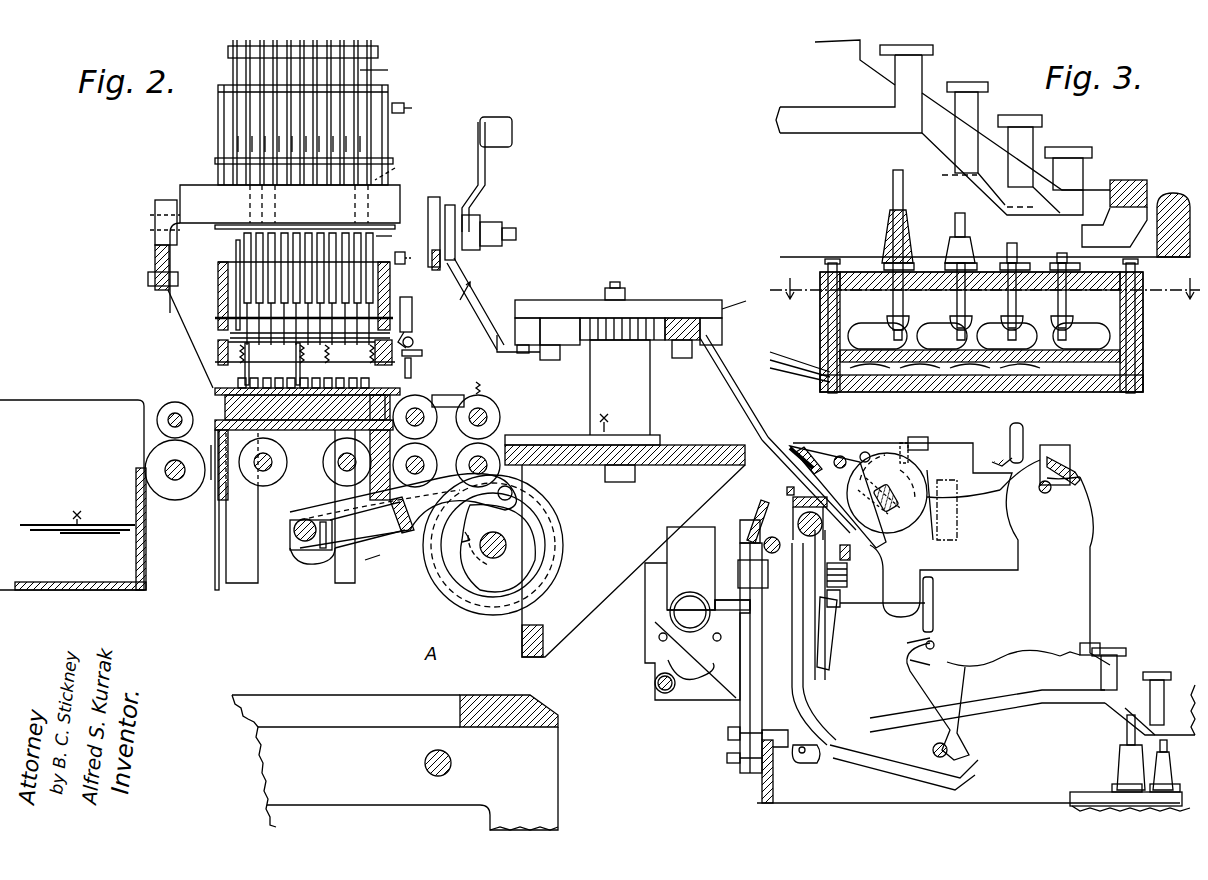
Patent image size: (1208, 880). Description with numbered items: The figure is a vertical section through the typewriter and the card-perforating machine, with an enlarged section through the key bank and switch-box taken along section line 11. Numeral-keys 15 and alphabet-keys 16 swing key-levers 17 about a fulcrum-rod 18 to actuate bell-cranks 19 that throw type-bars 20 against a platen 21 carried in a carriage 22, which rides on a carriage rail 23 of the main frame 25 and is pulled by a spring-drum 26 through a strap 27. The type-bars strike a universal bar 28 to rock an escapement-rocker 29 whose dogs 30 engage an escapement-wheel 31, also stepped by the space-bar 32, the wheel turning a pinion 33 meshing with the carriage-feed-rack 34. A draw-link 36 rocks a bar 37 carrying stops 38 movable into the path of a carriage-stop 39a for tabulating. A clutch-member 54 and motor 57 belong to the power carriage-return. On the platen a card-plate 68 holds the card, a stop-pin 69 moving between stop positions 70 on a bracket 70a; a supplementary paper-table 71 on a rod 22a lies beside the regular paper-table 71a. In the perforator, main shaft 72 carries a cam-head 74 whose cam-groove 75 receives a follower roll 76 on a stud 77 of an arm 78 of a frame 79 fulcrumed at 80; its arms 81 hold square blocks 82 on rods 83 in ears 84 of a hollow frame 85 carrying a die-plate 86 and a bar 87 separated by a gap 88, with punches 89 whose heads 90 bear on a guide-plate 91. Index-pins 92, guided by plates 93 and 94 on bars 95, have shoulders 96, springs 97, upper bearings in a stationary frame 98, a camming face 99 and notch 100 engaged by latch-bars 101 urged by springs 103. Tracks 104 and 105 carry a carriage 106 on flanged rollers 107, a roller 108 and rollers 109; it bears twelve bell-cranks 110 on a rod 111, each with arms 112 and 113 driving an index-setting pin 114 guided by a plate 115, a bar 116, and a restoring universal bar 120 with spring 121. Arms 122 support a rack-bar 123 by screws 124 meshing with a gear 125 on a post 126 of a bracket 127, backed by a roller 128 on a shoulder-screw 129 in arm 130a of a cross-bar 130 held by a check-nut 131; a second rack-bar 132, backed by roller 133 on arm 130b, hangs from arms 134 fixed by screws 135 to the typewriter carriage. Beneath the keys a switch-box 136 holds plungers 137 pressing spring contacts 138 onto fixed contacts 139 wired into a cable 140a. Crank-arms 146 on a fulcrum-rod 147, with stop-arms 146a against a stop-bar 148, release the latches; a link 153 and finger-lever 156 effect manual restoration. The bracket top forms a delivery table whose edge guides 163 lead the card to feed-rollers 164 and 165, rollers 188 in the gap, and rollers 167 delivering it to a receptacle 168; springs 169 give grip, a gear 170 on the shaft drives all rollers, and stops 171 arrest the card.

In FIG. 3, the section line 11 is at (983, 281).
In FIG. 2, the numeral-keys 15 is at (1116, 655).
In FIG. 3, the numeral-keys 15 is at (922, 62).
In FIG. 2, the alphabet-keys 16 is at (1160, 680).
In FIG. 3, the alphabet-keys 16 is at (1015, 117).
In FIG. 2, the key-levers 17 is at (1022, 705).
In FIG. 3, the key-levers 17 is at (983, 148).
In FIG. 2, the fulcrum-rod 18 is at (803, 745).
In FIG. 2, the bell-cranks 19 is at (938, 700).
In FIG. 2, the type-bars 20 is at (1010, 660).
In FIG. 2, the platen 21 is at (887, 493).
In FIG. 2, the carriage 22 is at (936, 474).
In FIG. 3, the carriage 22 is at (935, 50).
In FIG. 2, the rod 22a is at (840, 470).
In FIG. 2, the carriage rail 23 is at (1050, 492).
In FIG. 2, the main frame 25 is at (951, 554).
In FIG. 2, the spring-drum 26 is at (795, 662).
In FIG. 2, the strap 27 is at (805, 588).
In FIG. 2, the universal bar 28 is at (934, 600).
In FIG. 2, the escapement-rocker 29 is at (830, 630).
In FIG. 2, the escapement dogs 30 is at (842, 598).
In FIG. 2, the escapement-wheel 31 is at (819, 523).
In FIG. 3, the space-bar 32 is at (1123, 180).
In FIG. 2, the pinion 33 is at (848, 570).
In FIG. 2, the carriage-feed-rack 34 is at (847, 545).
In FIG. 2, the draw-link 36 is at (808, 715).
In FIG. 2, the rocking bar 37 is at (753, 574).
In FIG. 2, the stops 38 is at (752, 518).
In FIG. 2, the block 39a is at (790, 492).
In FIG. 2, the clutch-member 54 is at (745, 588).
In FIG. 2, the motor 57 is at (697, 613).
In FIG. 2, the card-plate 68 is at (868, 453).
In FIG. 2, the stop-pin 69 is at (904, 446).
In FIG. 2, the stop positions 70 is at (890, 510).
In FIG. 2, the bracket 70a is at (918, 447).
In FIG. 2, the supplementary paper-table 71 is at (806, 452).
In FIG. 2, the regular paper-table 71a is at (817, 465).
In FIG. 2, the main driving shaft 72 is at (494, 532).
In FIG. 2, the cam-head 74 is at (560, 556).
In FIG. 2, the cam-groove 75 is at (515, 556).
In FIG. 2, the follower roll 76 is at (518, 508).
In FIG. 2, the stud 77 is at (498, 494).
In FIG. 2, the arm 78 is at (403, 511).
In FIG. 2, the frame 79 is at (380, 562).
In FIG. 2, the fulcrum 80 is at (392, 520).
In FIG. 2, the arms 81 is at (367, 525).
In FIG. 2, the square block 82 is at (292, 526).
In FIG. 2, the rod 83 is at (300, 546).
In FIG. 2, the ears 84 is at (303, 560).
In FIG. 2, the hollow rectangular frame 85 is at (244, 492).
In FIG. 2, the die-plate 86 is at (288, 468).
In FIG. 2, the bar 87 is at (228, 412).
In FIG. 2, the gap 88 is at (295, 392).
In FIG. 2, the punches 89 is at (372, 409).
In FIG. 2, the enlarged heads 90 is at (244, 364).
In FIG. 2, the punch guide-plate 91 is at (218, 392).
In FIG. 2, the index-pins 92 is at (300, 364).
In FIG. 2, the plate 93 is at (230, 343).
In FIG. 2, the plate 94 is at (222, 362).
In FIG. 2, the bars 95 is at (218, 350).
In FIG. 2, the shoulder 96 is at (240, 366).
In FIG. 2, the spring 97 is at (380, 365).
In FIG. 2, the stationary frame 98 is at (238, 242).
In FIG. 2, the camming face 99 is at (236, 324).
In FIG. 2, the notch 100 is at (218, 296).
In FIG. 2, the latch-bar 101 is at (381, 298).
In FIG. 2, the springs 103 is at (216, 316).
In FIG. 2, the front track 104 is at (468, 262).
In FIG. 2, the rear track 105 is at (155, 265).
In FIG. 2, the carriage 106 is at (290, 204).
In FIG. 2, the flanged rollers 107 is at (440, 204).
In FIG. 2, the roller 108 is at (155, 210).
In FIG. 2, the rollers 109 is at (168, 292).
In FIG. 2, the bell-cranks 110 is at (245, 118).
In FIG. 2, the rod 111 is at (396, 166).
In FIG. 2, the vertically-disposed arm 112 is at (388, 71).
In FIG. 2, the horizontal arm 113 is at (238, 153).
In FIG. 2, the index-setting pin 114 is at (289, 268).
In FIG. 2, the plate 115 is at (222, 228).
In FIG. 2, the bar 116 is at (230, 52).
In FIG. 2, the universal bar 120 is at (228, 85).
In FIG. 2, the spring 121 is at (417, 107).
In FIG. 2, the arms 122 is at (480, 312).
In FIG. 2, the rack-bar 123 is at (556, 318).
In FIG. 2, the screws 124 is at (550, 360).
In FIG. 2, the gear 125 is at (646, 318).
In FIG. 2, the post 126 is at (620, 387).
In FIG. 2, the bracket 127 is at (690, 452).
In FIG. 2, the roller 128 is at (514, 347).
In FIG. 2, the shoulder-screw 129 is at (525, 353).
In FIG. 2, the cross-bar 130 is at (690, 298).
In FIG. 2, the arm 130a is at (528, 318).
In FIG. 2, the arm 130b is at (753, 298).
In FIG. 2, the check-nut 131 is at (612, 288).
In FIG. 2, the second rack-bar 132 is at (688, 318).
In FIG. 2, the backing-up roller 133 is at (722, 330).
In FIG. 2, the arms 134 is at (726, 352).
In FIG. 2, the screws 135 is at (768, 456).
In FIG. 2, the switch-box 136 is at (1075, 826).
In FIG. 3, the switch-box 136 is at (1145, 320).
In FIG. 2, the plungers 137 is at (1128, 764).
In FIG. 3, the plungers 137 is at (893, 188).
In FIG. 3, the spring contact 138 is at (868, 323).
In FIG. 3, the fixed contact 139 is at (908, 326).
In FIG. 3, the cable 140a is at (822, 358).
In FIG. 2, the crank-arm 146 is at (403, 297).
In FIG. 2, the stop-arm 146a is at (422, 353).
In FIG. 2, the fulcrum-rod 147 is at (414, 341).
In FIG. 2, the stop-bar 148 is at (411, 366).
In FIG. 2, the link 153 is at (457, 298).
In FIG. 2, the finger-lever 156 is at (487, 174).
In FIG. 2, the edge guides 163 is at (560, 435).
In FIG. 2, the feed-rollers 164 is at (500, 420).
In FIG. 2, the feed-rollers 165 is at (470, 447).
In FIG. 2, the rollers 167 is at (175, 451).
In FIG. 2, the receptacle 168 is at (73, 495).
In FIG. 2, the springs 169 is at (478, 386).
In FIG. 2, the gear 170 is at (556, 525).
In FIG. 2, the stops 171 is at (217, 440).
In FIG. 2, the roller 188 is at (325, 470).